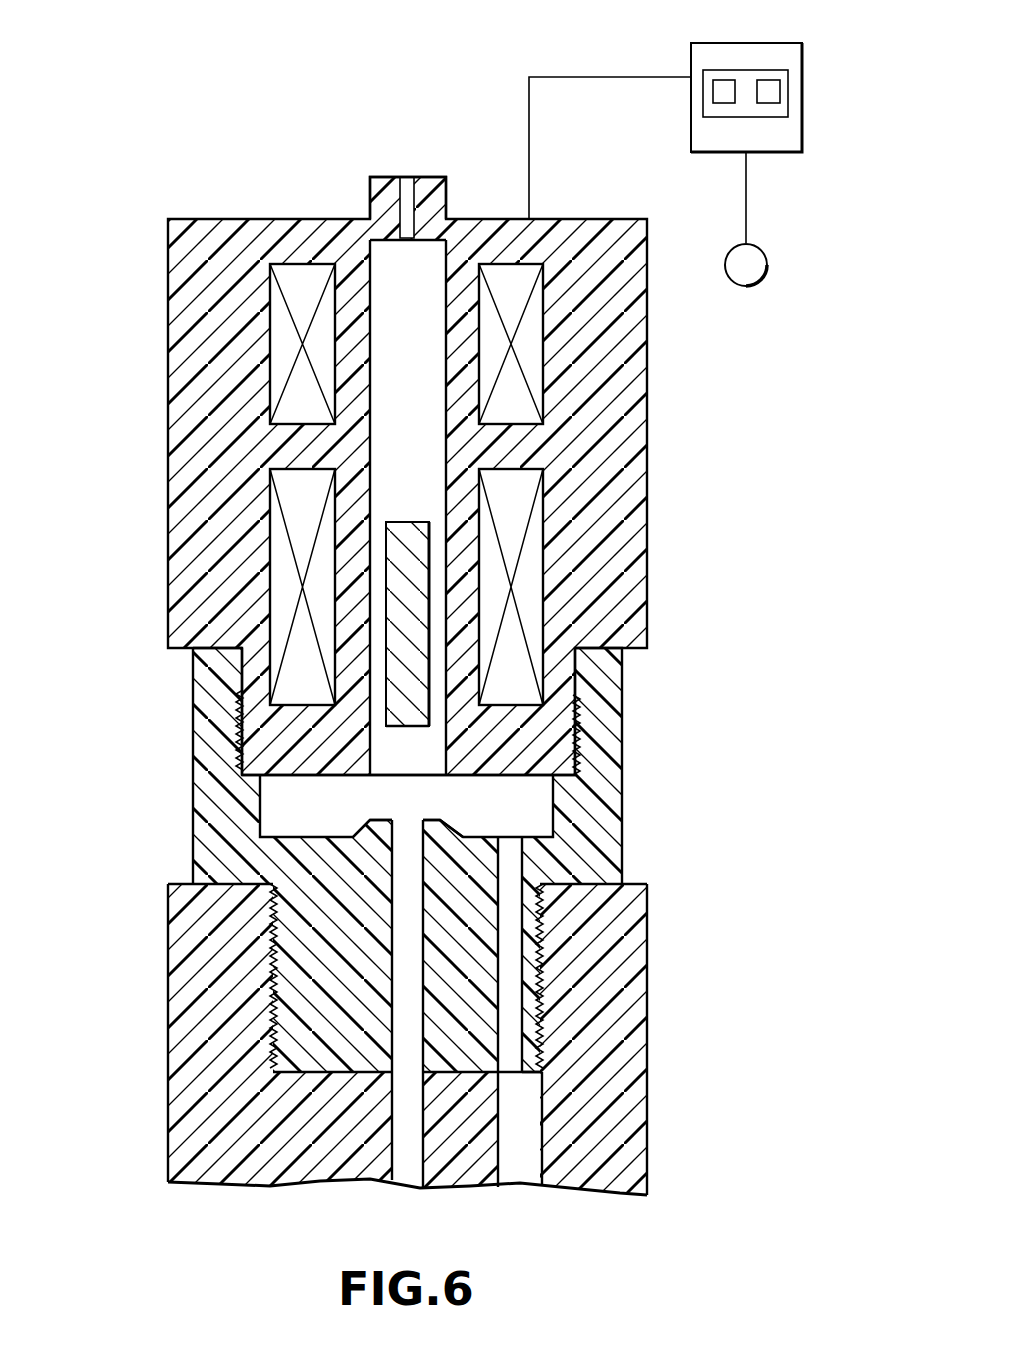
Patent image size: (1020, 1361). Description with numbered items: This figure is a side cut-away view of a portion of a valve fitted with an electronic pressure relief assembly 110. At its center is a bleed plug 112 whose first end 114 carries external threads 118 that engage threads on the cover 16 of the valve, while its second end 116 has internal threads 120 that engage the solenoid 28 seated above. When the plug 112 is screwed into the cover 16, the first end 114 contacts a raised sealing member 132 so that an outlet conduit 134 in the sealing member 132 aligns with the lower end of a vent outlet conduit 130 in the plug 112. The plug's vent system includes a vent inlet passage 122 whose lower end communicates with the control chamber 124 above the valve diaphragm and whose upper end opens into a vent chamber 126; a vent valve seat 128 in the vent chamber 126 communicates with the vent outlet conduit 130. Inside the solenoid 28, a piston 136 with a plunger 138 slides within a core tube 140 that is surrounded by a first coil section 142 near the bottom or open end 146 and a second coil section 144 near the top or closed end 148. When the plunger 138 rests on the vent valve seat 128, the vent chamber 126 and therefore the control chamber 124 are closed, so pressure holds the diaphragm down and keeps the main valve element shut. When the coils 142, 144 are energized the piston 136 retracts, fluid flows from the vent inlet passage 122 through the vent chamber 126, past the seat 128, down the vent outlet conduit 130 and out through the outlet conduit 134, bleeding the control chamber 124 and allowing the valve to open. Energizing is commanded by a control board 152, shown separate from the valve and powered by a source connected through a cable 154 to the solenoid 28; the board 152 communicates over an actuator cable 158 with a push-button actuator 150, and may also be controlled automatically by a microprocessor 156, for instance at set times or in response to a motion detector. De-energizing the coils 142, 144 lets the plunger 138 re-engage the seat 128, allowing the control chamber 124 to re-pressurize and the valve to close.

The pressure relief assembly 110 is at (150, 258).
The solenoid 28 is at (213, 243).
The closed end 148 is at (372, 203).
The core tube 140 is at (447, 627).
The second coil section 144 is at (533, 305).
The first coil section 142 is at (545, 485).
The piston 136 is at (412, 532).
The plunger 138 is at (400, 700).
The bleed plug 112 is at (205, 850).
The second end 116 is at (205, 675).
The internal threads 120 is at (585, 713).
The vent chamber 126 is at (275, 787).
The vent valve seat 128 is at (447, 822).
The open end 146 is at (345, 785).
The vent outlet conduit 130 is at (410, 897).
The cover 16 is at (170, 1005).
The first end 114 is at (318, 1040).
The vent inlet passage 122 is at (530, 955).
The outlet conduit 134 is at (415, 1178).
The external threads 118 is at (510, 953).
The raised sealing member 132 is at (478, 1188).
The control chamber 124 is at (530, 1115).
The control board 152 is at (793, 47).
The microprocessor 156 is at (720, 82).
The cable 154 is at (530, 135).
The actuator cable 158 is at (746, 185).
The actuator 150 is at (768, 275).